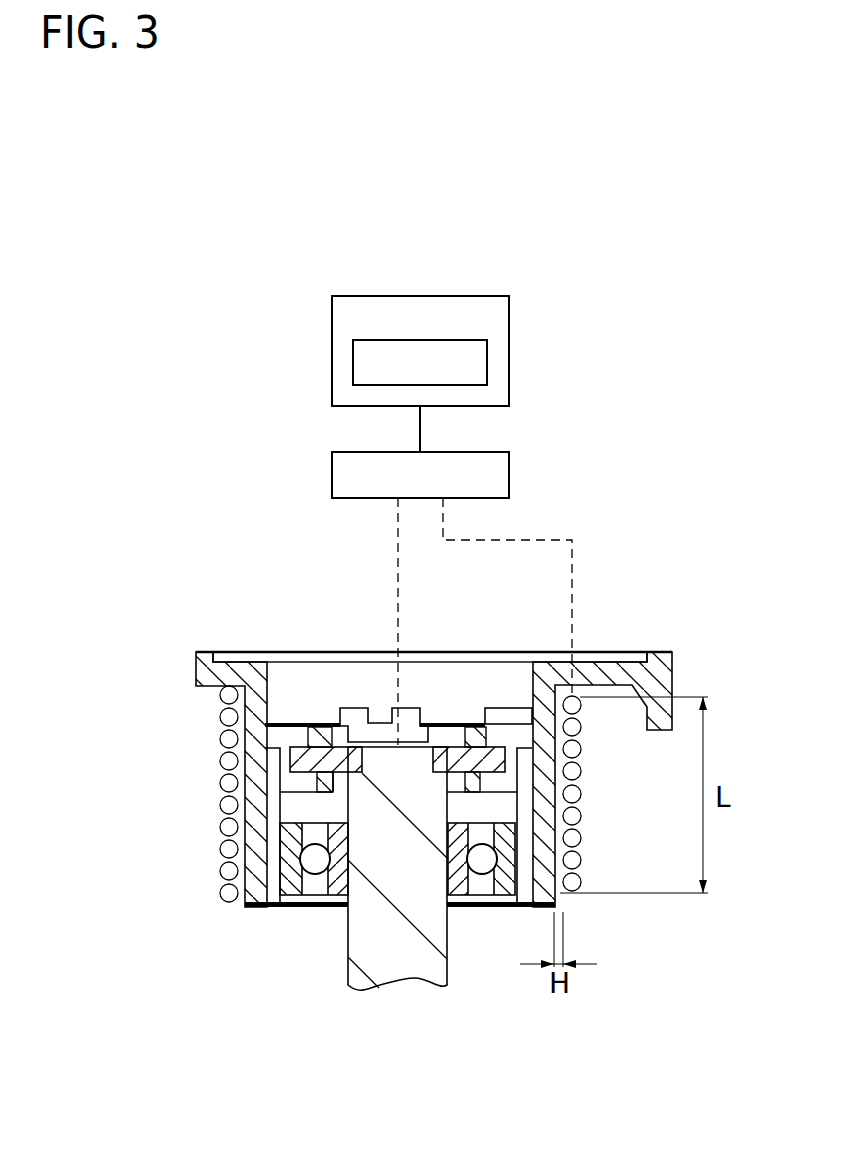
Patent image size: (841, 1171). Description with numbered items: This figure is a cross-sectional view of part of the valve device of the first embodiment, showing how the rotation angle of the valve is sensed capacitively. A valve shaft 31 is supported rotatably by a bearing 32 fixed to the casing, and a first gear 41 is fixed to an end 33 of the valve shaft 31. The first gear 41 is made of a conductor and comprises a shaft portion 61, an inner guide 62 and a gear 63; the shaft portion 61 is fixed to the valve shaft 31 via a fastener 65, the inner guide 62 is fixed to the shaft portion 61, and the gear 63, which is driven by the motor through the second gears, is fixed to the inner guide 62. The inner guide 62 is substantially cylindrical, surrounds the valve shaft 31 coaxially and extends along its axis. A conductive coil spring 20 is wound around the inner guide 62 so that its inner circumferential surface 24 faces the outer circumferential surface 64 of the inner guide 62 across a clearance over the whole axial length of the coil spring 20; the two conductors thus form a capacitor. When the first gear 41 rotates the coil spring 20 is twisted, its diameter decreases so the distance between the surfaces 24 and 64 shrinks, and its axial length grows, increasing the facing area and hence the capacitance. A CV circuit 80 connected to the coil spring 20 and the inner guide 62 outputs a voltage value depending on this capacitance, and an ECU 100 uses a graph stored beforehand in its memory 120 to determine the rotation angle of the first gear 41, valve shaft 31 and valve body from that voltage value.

The engine control unit (ECU) 100 is at (465, 295).
The memory 120 is at (422, 339).
The CV circuit 80 is at (465, 450).
The coil spring 20 is at (228, 850).
The inner circumferential surface 24 is at (243, 793).
The valve shaft 31 is at (437, 923).
The bearing 32 is at (292, 888).
The end 33 is at (408, 762).
The first gear 41 is at (243, 658).
The shaft portion 61 is at (310, 736).
The inner guide 62 is at (253, 838).
The gear 63 is at (226, 672).
The outer circumferential surface 64 is at (245, 727).
The fastener 65 is at (345, 753).